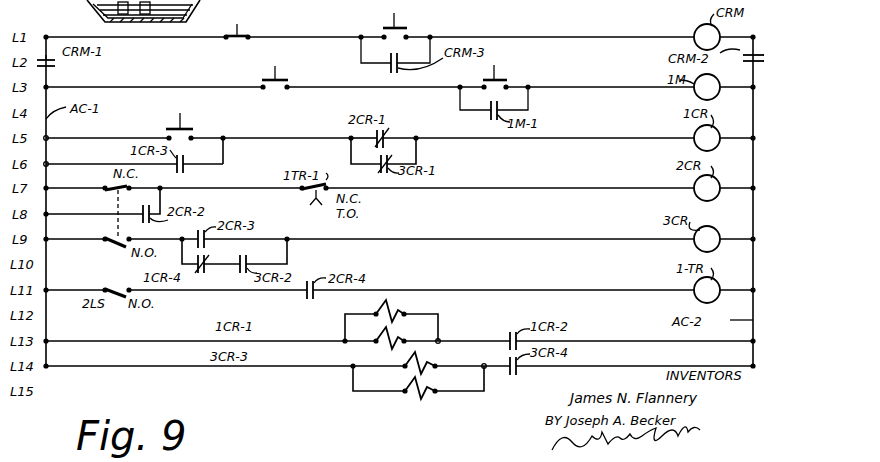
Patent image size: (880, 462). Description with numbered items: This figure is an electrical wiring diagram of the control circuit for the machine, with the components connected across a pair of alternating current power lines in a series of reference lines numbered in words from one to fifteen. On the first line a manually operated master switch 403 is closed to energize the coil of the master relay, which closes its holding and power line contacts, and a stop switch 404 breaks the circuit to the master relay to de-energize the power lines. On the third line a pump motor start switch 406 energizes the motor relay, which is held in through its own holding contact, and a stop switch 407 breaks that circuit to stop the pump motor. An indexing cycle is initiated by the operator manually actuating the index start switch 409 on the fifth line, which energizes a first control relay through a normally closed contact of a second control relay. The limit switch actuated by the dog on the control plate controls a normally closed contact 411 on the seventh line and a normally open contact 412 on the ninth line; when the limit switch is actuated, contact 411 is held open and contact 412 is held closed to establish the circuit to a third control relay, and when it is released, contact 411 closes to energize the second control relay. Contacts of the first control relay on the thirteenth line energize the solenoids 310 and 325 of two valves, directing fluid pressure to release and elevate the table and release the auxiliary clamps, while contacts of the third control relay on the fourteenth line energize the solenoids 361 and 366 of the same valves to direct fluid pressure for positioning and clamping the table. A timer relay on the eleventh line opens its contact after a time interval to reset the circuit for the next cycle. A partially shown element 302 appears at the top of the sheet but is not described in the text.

The pressure switch housing 302 is at (196, 5).
The master switch 403 is at (398, 27).
The stop switch 404 is at (238, 42).
The pump motor start switch 406 is at (500, 79).
The stop switch 407 is at (279, 79).
The index start switch 409 is at (186, 128).
The normally closed contact 411 is at (110, 190).
The normally open contact 412 is at (118, 250).
The solenoid 325 is at (392, 308).
The solenoid 310 is at (391, 334).
The solenoid 361 is at (425, 360).
The solenoid 366 is at (425, 385).